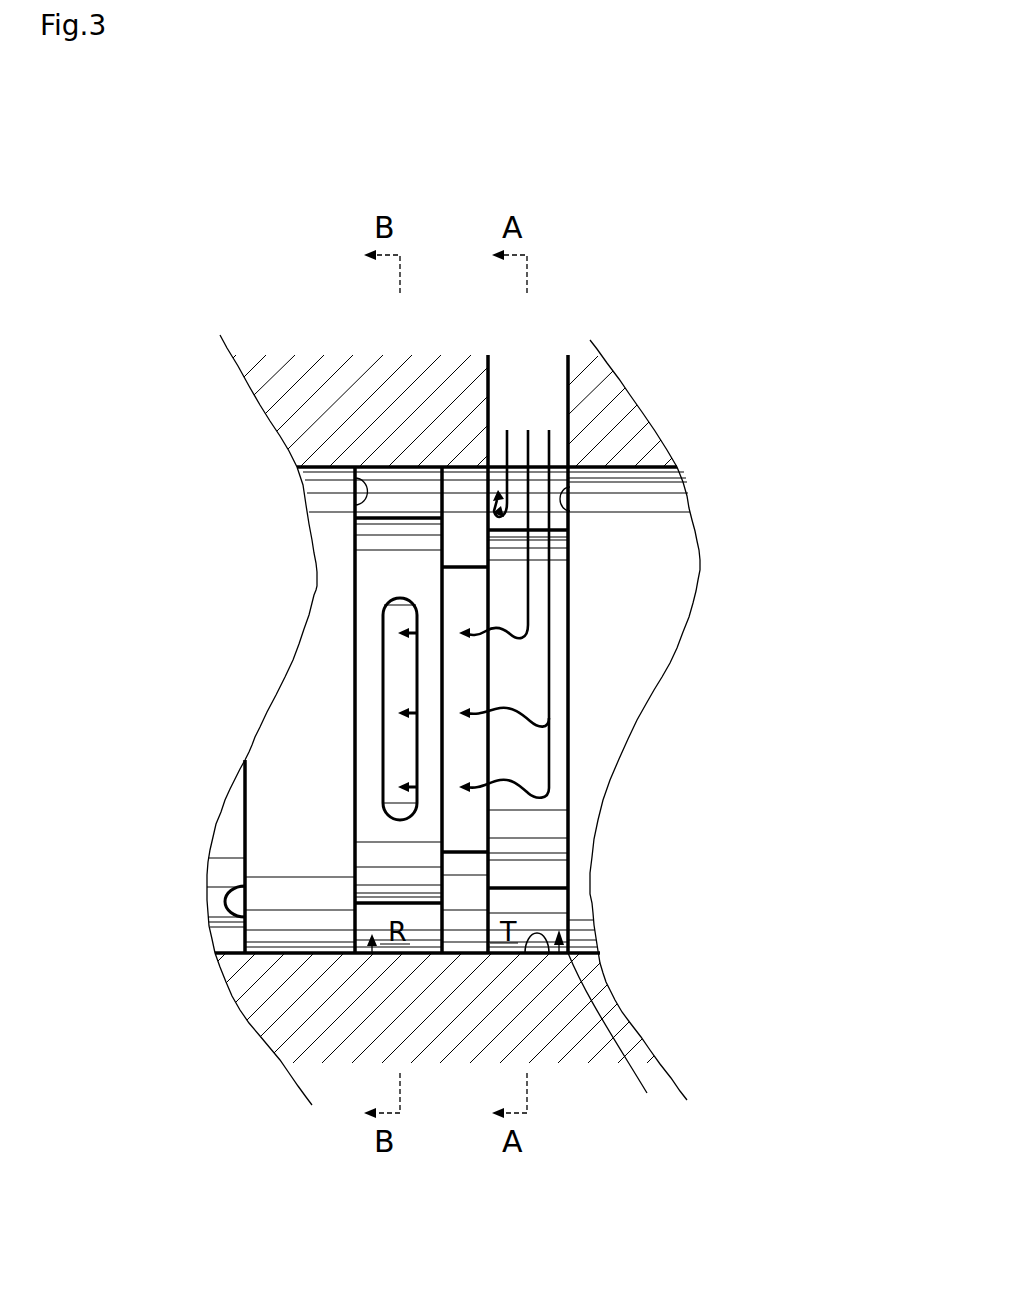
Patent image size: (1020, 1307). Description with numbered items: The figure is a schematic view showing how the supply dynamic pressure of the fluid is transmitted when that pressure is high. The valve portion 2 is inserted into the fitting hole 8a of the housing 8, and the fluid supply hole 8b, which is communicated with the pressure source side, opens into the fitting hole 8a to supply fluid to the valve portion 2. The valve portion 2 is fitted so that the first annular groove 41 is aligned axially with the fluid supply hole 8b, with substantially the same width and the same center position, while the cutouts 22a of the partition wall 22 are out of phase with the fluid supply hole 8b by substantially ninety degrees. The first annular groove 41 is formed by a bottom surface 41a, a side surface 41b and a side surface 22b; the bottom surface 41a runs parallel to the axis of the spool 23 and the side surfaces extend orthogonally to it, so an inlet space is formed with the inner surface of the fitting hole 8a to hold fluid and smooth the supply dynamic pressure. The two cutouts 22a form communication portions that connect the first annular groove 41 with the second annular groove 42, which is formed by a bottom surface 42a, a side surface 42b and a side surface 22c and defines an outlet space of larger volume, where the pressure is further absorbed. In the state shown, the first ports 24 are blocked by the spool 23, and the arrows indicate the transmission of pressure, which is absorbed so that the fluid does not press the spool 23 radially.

The valve portion 2 is at (606, 672).
The housing 8 is at (600, 388).
The fitting hole 8a is at (548, 953).
The fluid supply hole 8b is at (550, 394).
The partition wall 22 is at (456, 953).
The cutout 22a is at (488, 812).
The side surface 22b is at (488, 902).
The side surface 22c is at (437, 497).
The spool 23 is at (397, 767).
The first port 24 is at (390, 698).
The first annular groove 41 is at (557, 953).
The bottom surface 41a is at (573, 523).
The side surface 41b is at (577, 489).
The second annular groove 42 is at (372, 953).
The bottom surface 42a is at (403, 513).
The side surface 42b is at (356, 480).